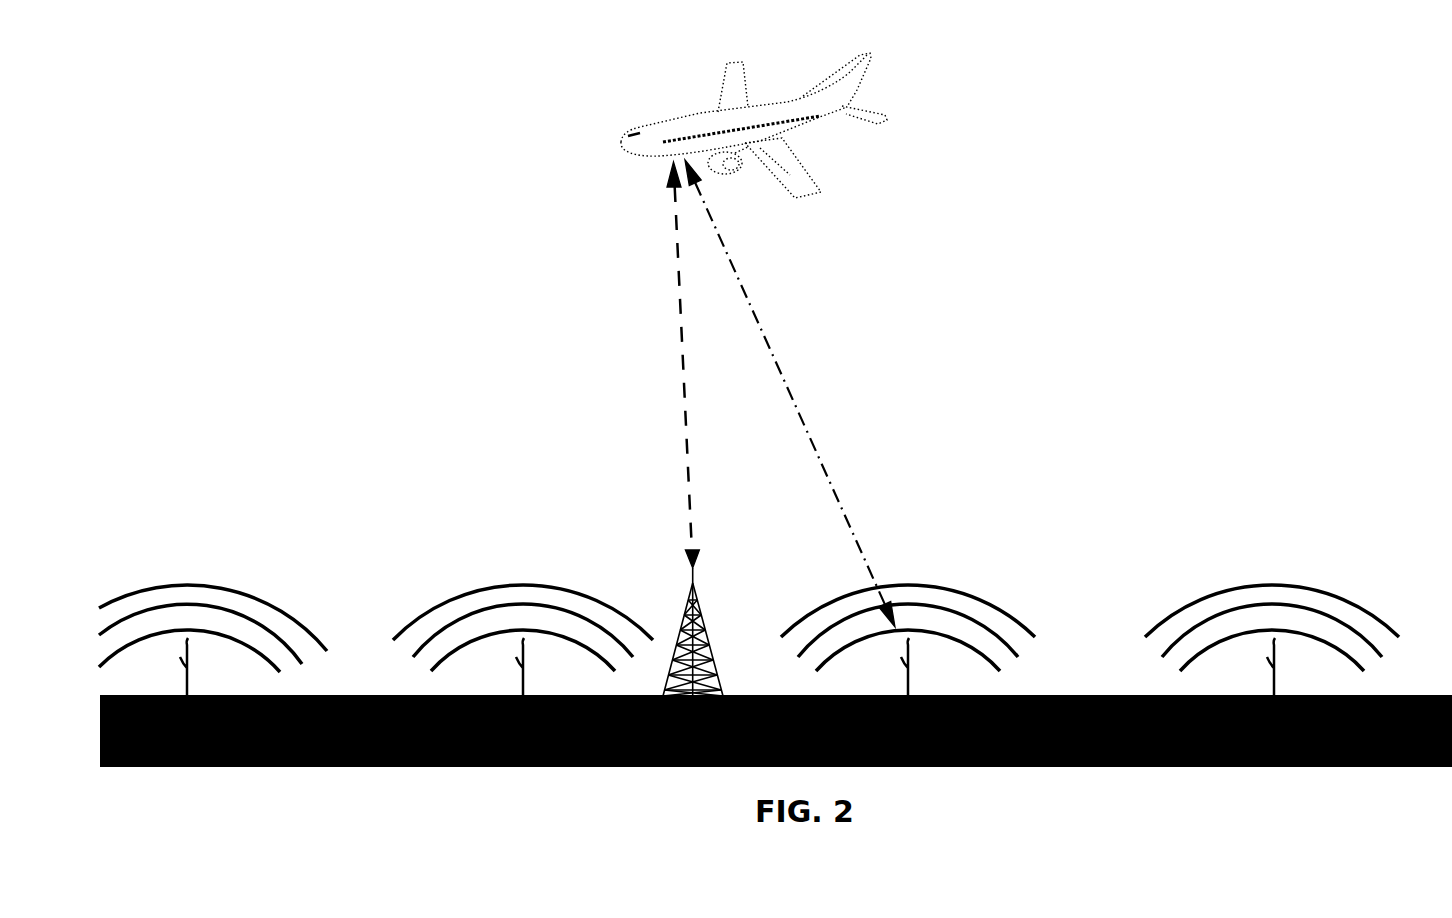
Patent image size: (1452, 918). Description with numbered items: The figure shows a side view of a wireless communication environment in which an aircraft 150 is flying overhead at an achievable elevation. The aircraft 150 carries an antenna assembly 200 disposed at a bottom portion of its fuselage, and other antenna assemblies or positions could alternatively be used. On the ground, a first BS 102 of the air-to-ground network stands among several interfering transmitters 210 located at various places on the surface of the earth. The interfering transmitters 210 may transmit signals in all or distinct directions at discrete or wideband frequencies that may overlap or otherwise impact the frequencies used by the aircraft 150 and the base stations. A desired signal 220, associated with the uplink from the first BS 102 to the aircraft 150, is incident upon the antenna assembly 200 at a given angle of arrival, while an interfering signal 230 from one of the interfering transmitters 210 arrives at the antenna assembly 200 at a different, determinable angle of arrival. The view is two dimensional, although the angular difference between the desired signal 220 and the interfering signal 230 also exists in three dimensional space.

The aircraft 150 is at (662, 125).
The antenna assembly 200 is at (668, 156).
The desired signal 220 is at (678, 323).
The interfering signal 230 is at (805, 425).
The first BS 102 is at (703, 635).
The interfering transmitters 210 is at (188, 665).